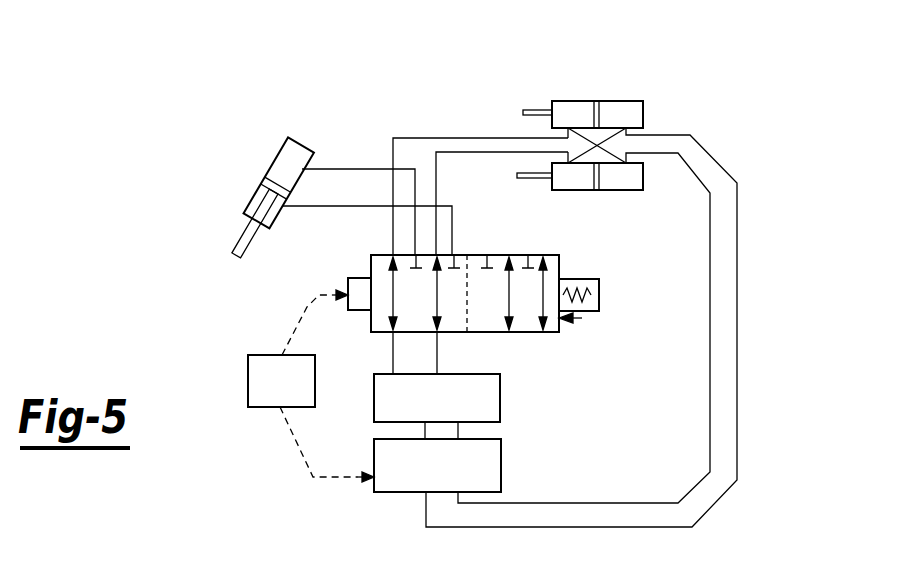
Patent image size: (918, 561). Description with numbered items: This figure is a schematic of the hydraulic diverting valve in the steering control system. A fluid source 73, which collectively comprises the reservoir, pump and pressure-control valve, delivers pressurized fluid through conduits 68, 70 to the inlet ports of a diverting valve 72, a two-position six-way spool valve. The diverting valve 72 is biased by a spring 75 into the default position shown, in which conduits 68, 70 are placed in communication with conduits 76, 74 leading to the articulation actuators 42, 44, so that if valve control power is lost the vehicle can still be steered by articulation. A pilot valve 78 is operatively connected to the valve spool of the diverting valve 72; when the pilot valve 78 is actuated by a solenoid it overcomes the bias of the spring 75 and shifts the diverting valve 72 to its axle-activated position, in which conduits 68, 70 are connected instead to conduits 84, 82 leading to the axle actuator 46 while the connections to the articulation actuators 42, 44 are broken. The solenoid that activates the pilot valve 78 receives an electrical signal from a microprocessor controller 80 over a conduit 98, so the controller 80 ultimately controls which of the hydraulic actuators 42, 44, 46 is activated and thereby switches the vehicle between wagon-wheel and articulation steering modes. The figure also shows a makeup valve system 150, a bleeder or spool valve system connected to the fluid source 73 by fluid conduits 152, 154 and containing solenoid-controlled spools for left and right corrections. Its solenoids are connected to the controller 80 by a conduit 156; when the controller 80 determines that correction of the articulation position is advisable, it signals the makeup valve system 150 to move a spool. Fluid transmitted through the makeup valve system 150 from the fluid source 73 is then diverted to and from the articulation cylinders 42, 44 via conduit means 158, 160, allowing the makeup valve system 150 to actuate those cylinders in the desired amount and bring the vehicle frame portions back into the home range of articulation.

The articulation actuator 42 is at (623, 108).
The articulation actuator 44 is at (628, 182).
The axle actuator 46 is at (283, 157).
The conduit 76 is at (476, 138).
The conduit 74 is at (458, 153).
The conduit 84 is at (330, 169).
The conduit 82 is at (303, 207).
The pilot valve 78 is at (356, 278).
The spring 75 is at (572, 285).
The diverting valve 72 is at (580, 318).
The conduit 98 is at (307, 307).
The microprocessor controller 80 is at (262, 385).
The conduit 68 is at (393, 353).
The conduit 70 is at (440, 350).
The fluid source 73 is at (500, 400).
The fluid conduit 152 is at (424, 431).
The fluid conduit 154 is at (459, 431).
The makeup valve system 150 is at (503, 470).
The conduit 156 is at (300, 453).
The conduit means 158 is at (710, 442).
The conduit means 160 is at (738, 453).